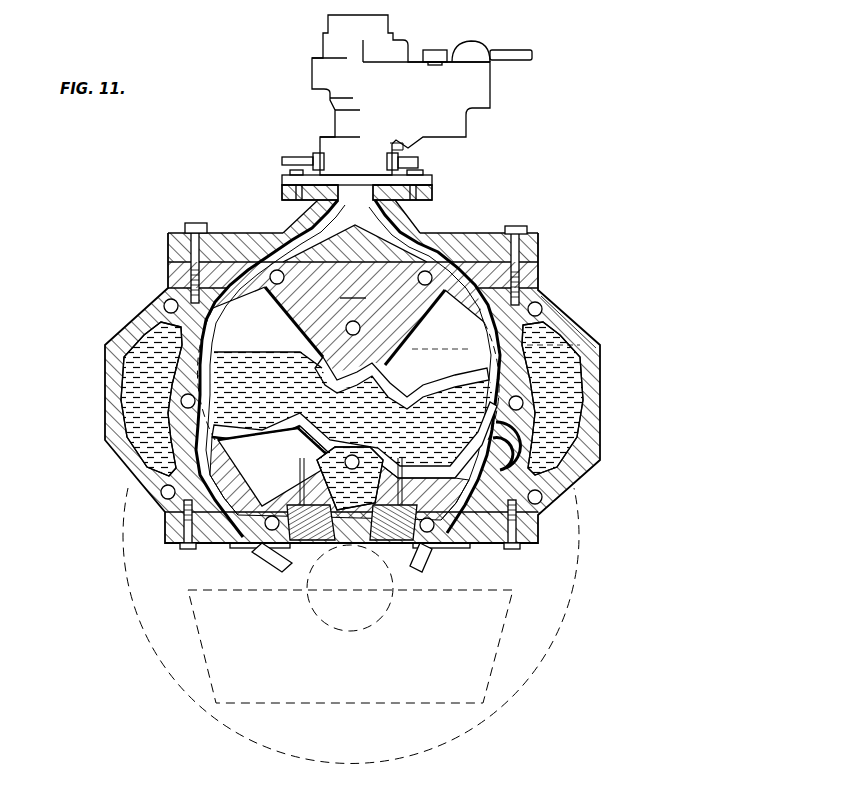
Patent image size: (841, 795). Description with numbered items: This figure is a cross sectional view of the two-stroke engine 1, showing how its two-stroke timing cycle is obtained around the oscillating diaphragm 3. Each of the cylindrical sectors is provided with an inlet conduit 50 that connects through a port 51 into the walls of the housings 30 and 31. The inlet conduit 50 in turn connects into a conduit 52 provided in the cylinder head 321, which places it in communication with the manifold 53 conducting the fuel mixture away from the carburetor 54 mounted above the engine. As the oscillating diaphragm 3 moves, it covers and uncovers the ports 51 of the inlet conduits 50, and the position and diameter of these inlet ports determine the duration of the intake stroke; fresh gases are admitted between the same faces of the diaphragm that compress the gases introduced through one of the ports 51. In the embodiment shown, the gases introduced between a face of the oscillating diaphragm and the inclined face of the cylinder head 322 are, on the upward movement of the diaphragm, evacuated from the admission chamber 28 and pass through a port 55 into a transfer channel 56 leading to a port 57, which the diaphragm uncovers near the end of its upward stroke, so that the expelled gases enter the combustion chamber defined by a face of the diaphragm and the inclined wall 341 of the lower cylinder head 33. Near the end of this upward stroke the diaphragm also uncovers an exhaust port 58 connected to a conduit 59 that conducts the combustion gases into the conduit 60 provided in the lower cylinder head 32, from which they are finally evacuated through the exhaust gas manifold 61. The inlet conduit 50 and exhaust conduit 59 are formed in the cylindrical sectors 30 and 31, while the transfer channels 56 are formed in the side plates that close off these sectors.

The pump casing 1 is at (115, 432).
The oscillating diaphragm 3 is at (290, 458).
The admission chamber 28 is at (252, 440).
The housing 30 is at (268, 482).
The housing 31 is at (413, 379).
The lower cylinder head 32 is at (215, 543).
The cylinder head 321 is at (355, 291).
The inclined face of the cylinder head 322 is at (412, 343).
The lower cylinder head 33 is at (350, 478).
The inclined wall of the lower cylinder head 341 is at (410, 483).
The inlet conduit 50 is at (540, 307).
The port 51 is at (553, 345).
The conduit 52 is at (349, 368).
The manifold 53 is at (230, 233).
The carburetor 54 is at (334, 116).
The port 55 is at (408, 349).
The transfer channel 56 is at (528, 364).
The port 57 is at (284, 425).
The exhaust port 58 is at (528, 434).
The conduit 59 is at (533, 463).
The conduit 60 is at (477, 548).
The exhaust gas manifold 61 is at (425, 566).